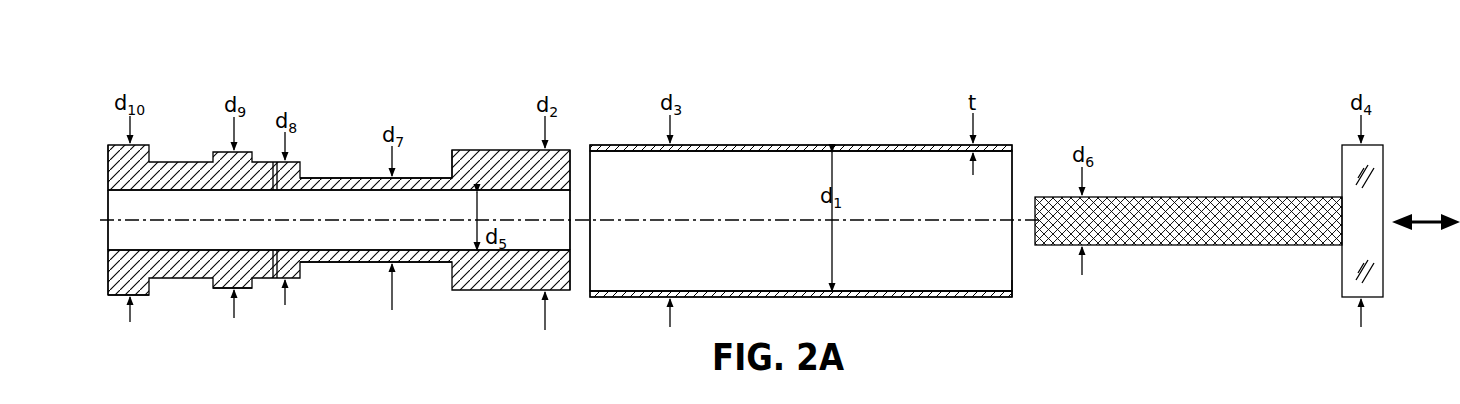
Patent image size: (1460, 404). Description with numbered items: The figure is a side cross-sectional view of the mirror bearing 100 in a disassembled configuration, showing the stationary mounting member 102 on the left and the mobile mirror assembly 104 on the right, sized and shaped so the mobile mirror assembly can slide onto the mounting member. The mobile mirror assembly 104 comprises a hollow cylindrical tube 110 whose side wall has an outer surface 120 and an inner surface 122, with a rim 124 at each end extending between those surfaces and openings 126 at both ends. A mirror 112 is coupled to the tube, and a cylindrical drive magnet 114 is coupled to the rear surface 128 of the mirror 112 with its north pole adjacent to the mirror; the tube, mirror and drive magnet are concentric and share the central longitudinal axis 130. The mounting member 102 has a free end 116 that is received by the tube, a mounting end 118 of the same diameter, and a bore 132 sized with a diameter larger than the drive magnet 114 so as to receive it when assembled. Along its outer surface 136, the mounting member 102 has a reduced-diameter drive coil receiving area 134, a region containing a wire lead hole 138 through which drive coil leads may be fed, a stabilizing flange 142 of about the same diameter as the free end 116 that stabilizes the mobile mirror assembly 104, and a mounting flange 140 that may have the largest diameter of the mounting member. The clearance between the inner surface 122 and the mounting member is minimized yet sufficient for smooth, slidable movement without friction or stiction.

The mirror bearing 100 is at (1232, 48).
The mounting member 102 is at (570, 90).
The mobile mirror assembly 104 is at (1382, 90).
The tube 110 is at (779, 144).
The mirror 112 is at (1388, 160).
The drive magnet 114 is at (1193, 195).
The free end 116 is at (572, 162).
The mounting end 118 is at (105, 148).
The outer surface 120 is at (912, 299).
The inner surface 122 is at (964, 294).
The rim 124 is at (1013, 293).
The openings 126 is at (997, 165).
The rear surface 128 is at (1341, 166).
The central longitudinal axis 130 is at (168, 222).
The bore 132 is at (336, 254).
The drive coil receiving area 134 is at (348, 176).
The outer surface 136 is at (421, 177).
The wire lead hole 138 is at (274, 160).
The mounting flange 140 is at (112, 297).
The stabilizing flange 142 is at (219, 292).